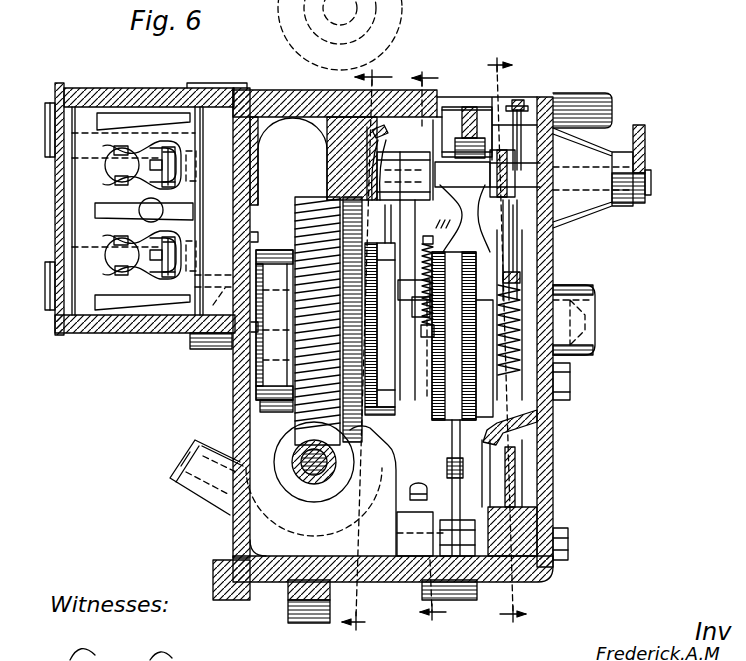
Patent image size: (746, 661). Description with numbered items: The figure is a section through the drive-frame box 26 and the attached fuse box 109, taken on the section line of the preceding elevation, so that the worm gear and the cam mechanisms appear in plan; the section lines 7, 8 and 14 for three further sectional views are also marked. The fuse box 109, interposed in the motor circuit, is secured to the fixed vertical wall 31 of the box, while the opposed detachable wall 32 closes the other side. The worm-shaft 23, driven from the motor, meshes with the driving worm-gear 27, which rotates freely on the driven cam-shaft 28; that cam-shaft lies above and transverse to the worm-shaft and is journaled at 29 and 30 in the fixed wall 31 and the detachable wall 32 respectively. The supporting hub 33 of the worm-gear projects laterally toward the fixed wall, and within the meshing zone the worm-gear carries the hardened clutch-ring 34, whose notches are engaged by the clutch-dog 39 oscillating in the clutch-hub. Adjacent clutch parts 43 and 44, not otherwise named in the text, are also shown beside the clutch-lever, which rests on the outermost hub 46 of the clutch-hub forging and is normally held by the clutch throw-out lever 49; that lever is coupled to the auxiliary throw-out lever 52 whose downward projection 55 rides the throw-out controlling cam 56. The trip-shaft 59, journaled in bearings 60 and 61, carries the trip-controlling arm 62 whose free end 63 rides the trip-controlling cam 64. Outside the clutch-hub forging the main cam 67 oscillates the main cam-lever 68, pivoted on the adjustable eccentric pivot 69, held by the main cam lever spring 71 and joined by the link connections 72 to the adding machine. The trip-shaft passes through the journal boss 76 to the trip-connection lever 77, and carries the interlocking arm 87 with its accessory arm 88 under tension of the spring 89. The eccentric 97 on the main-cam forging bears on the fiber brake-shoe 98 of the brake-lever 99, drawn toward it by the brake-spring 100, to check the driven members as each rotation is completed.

The section line 7- 7 is at (429, 348).
The section line 8- 8 is at (367, 346).
The section line 14- 14 is at (506, 342).
The worm-shaft 23 is at (355, 8).
The drive-frame box 26 is at (288, 97).
The driving worm-gear 27 is at (305, 195).
The driven cam-shaft 28 is at (602, 322).
The journal 29 is at (596, 290).
The journal 30 is at (196, 350).
The fixed wall 31 is at (236, 142).
The detachable wall 32 is at (555, 265).
The supporting hub 33 is at (268, 250).
The clutch-ring 34 is at (282, 408).
The clutch-dog 39 is at (414, 300).
The nut 43 is at (428, 236).
The coil spring 44 is at (434, 250).
The outermost hub 46 is at (416, 350).
The clutch throw-out lever 49 is at (441, 215).
The auxiliary throw-out lever 52 is at (373, 175).
The downward projection 55 is at (360, 235).
The throw-out controlling cam 56 is at (376, 412).
The trip-shaft 59 is at (440, 180).
The bearing 60 is at (332, 156).
The bearing 61 is at (593, 178).
The trip-controlling arm 62 is at (395, 190).
The free end 63 is at (382, 306).
The trip-controlling cam 64 is at (395, 398).
The main cam 67 is at (562, 0).
The main cam-lever 68 is at (447, 447).
The adjustable eccentric pivot 69 is at (457, 538).
The main cam lever spring 71 is at (447, 468).
The link connections 72 is at (468, 104).
The journal boss 76 is at (598, 148).
The trip-connection lever 77 is at (647, 132).
The interlocking arm 87 is at (502, 162).
The accessory arm 88 is at (514, 104).
The spring 89 is at (527, 106).
The eccentric 97 is at (550, 400).
The fiber brake-shoe 98 is at (520, 250).
The brake-lever 99 is at (512, 240).
The brake-spring 100 is at (572, 366).
The fuse box 109 is at (100, 334).